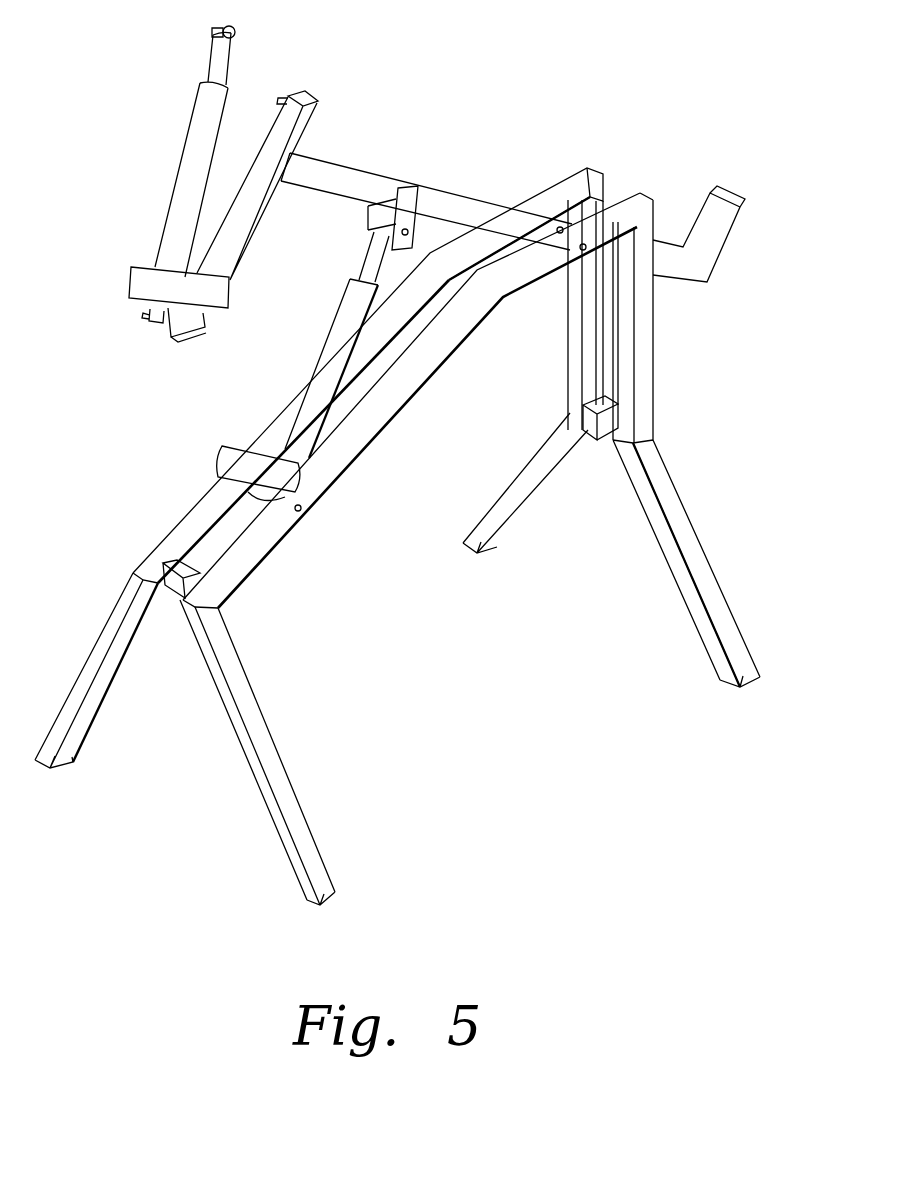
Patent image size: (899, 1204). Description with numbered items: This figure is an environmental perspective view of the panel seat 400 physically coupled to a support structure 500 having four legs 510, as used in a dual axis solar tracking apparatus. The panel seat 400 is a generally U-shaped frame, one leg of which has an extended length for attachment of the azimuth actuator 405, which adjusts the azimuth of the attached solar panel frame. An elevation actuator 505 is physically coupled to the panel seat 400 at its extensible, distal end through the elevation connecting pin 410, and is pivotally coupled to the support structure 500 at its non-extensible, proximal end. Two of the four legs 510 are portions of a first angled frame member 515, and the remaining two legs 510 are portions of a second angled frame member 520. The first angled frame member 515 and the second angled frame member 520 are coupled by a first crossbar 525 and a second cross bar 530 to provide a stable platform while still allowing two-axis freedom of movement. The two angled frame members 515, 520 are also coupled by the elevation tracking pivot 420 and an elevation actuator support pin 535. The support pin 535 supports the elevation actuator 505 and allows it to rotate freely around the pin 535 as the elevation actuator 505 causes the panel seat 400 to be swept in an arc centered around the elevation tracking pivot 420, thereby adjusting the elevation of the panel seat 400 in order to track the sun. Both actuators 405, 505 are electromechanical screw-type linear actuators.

The panel seat 400 is at (345, 167).
The azimuth actuator 405 is at (192, 121).
The elevation connecting pin 410 is at (428, 232).
The elevation tracking pivot 420 is at (572, 262).
The support structure 500 is at (118, 504).
The elevation actuator 505 is at (303, 367).
The legs 510 is at (93, 728).
The first angled frame member 515 is at (150, 575).
The second angled frame member 520 is at (290, 540).
The first crossbar 525 is at (175, 592).
The second cross bar 530 is at (597, 441).
The elevation actuator support pin 535 is at (303, 510).